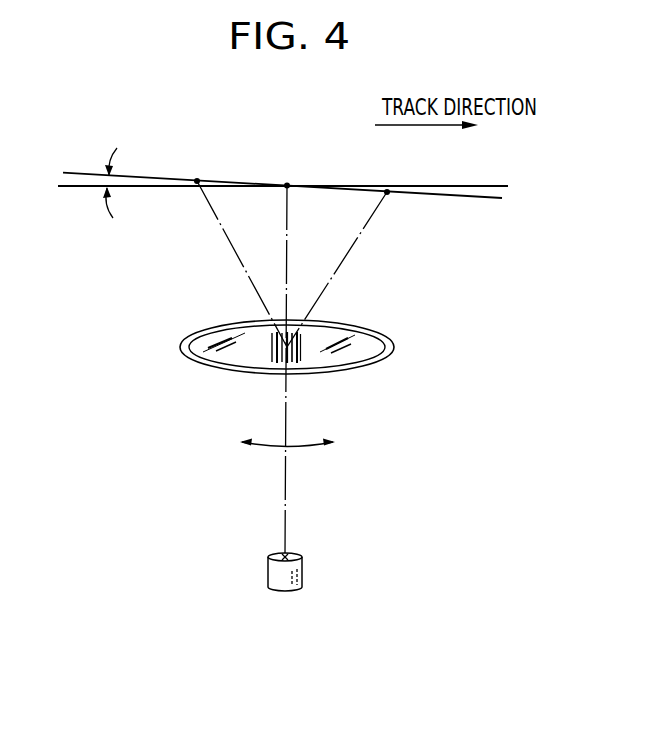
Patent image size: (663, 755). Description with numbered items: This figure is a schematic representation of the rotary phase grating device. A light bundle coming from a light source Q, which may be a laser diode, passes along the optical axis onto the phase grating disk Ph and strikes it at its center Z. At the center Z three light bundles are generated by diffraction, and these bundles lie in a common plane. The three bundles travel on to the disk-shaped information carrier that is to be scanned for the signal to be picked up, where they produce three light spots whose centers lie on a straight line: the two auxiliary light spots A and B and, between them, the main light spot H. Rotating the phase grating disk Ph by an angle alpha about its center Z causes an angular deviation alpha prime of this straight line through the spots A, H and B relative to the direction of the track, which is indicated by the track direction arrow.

The auxiliary light spot A is at (239, 248).
The main light spot H is at (287, 170).
The auxiliary light spot B is at (340, 249).
The phase grating disk Ph is at (373, 362).
The center Z is at (287, 343).
The light source Q is at (295, 573).